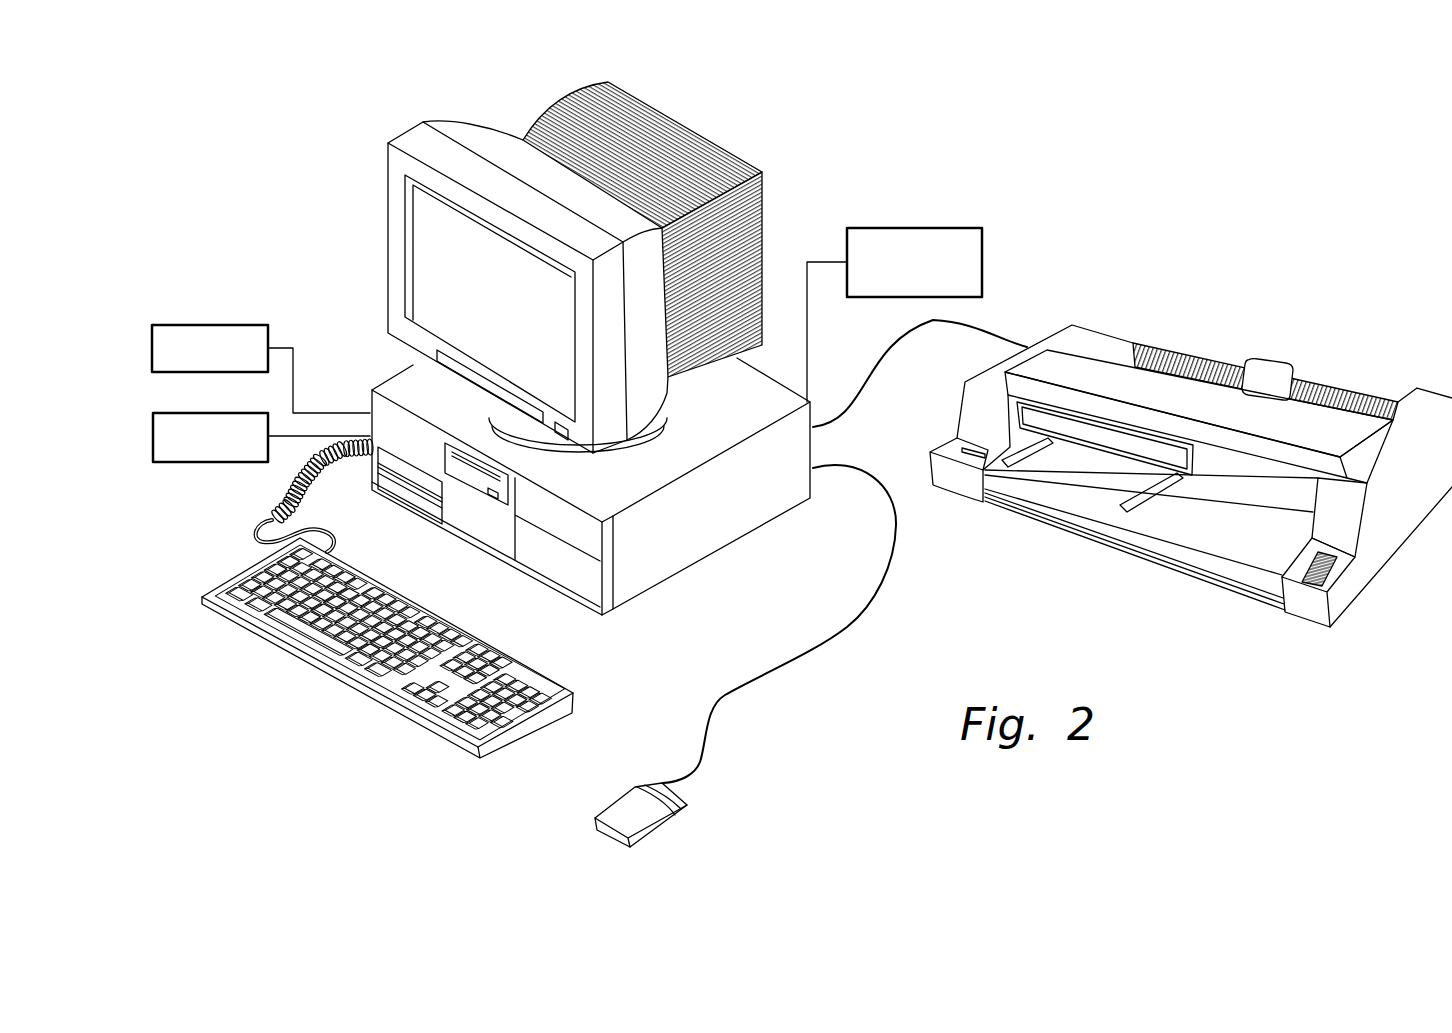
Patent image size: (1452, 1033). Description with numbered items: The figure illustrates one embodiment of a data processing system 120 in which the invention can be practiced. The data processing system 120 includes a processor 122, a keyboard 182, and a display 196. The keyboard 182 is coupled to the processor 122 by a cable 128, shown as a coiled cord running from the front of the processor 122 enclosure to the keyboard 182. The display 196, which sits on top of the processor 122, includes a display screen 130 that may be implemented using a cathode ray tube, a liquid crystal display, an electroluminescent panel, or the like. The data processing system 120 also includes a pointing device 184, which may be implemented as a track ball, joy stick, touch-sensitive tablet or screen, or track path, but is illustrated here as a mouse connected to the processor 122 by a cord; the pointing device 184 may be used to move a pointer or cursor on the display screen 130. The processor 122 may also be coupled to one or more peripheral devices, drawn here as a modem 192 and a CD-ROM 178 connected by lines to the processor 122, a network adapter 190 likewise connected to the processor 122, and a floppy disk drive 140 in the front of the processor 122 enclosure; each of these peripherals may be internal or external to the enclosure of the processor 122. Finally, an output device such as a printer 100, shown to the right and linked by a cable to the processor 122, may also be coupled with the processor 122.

The printer 100 is at (1145, 321).
The data processing system 120 is at (963, 133).
The processor 122 is at (607, 625).
The cable 128 is at (283, 495).
The display screen 130 is at (520, 308).
The floppy disk drive 140 is at (477, 473).
The CD-ROM 178 is at (200, 413).
The keyboard 182 is at (366, 694).
The pointing device 184 is at (678, 812).
The network adapter 190 is at (987, 241).
The modem 192 is at (200, 323).
The display 196 is at (378, 228).